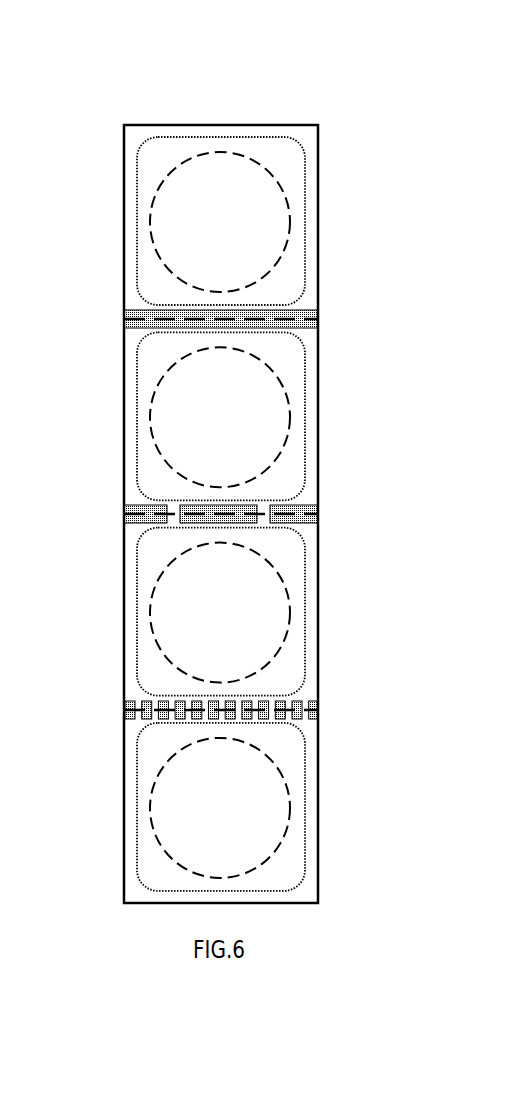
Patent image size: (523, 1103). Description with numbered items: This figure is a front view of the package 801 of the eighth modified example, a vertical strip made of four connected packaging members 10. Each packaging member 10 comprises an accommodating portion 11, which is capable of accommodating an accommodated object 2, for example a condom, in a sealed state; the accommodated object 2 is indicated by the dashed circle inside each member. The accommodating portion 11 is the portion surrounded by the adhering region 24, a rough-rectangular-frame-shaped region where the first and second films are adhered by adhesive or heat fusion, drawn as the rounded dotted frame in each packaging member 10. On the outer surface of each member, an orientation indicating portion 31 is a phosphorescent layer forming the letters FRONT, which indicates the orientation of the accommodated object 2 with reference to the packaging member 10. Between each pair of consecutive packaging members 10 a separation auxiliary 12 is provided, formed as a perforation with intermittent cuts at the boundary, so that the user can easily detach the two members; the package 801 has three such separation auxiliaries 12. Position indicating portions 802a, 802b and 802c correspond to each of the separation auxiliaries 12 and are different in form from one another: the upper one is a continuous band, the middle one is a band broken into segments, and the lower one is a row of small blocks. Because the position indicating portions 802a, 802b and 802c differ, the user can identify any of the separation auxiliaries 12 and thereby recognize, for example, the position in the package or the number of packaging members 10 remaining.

The package 801 is at (192, 100).
The packaging member 10 is at (123, 168).
The accommodating portion 11 is at (220, 487).
The adhering region 24 is at (303, 138).
The accommodated object 2 is at (287, 200).
The orientation indicating portion 31 is at (277, 266).
The separation auxiliary 12 is at (235, 500).
The position indicating portion 802a is at (302, 314).
The position indicating portion 802b is at (302, 509).
The position indicating portion 802c is at (302, 705).